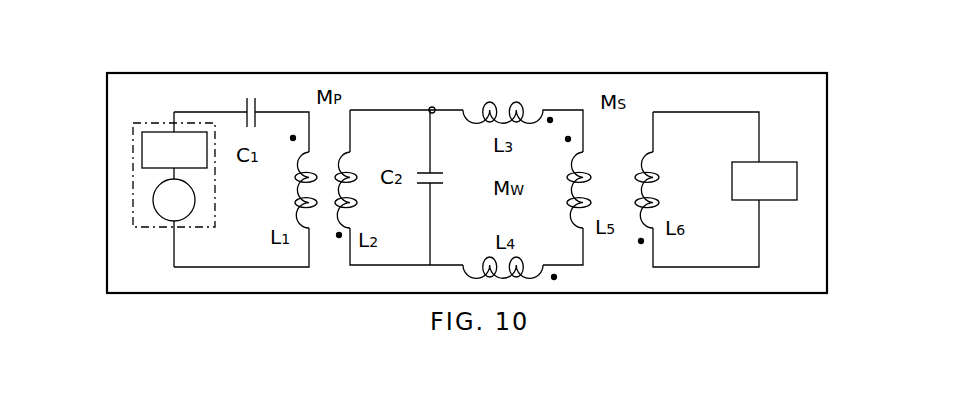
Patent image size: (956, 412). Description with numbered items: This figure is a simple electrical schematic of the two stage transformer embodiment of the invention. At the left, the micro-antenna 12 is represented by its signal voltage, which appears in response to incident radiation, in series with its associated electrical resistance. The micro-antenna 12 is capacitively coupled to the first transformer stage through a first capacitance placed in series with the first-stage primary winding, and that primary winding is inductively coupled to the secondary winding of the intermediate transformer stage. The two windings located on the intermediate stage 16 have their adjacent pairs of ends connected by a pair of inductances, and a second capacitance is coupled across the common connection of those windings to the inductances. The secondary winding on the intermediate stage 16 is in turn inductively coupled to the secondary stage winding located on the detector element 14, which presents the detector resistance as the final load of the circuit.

The micro-antenna 12 is at (217, 192).
The detector element 14 is at (770, 160).
The intermediate stage 16 is at (442, 90).